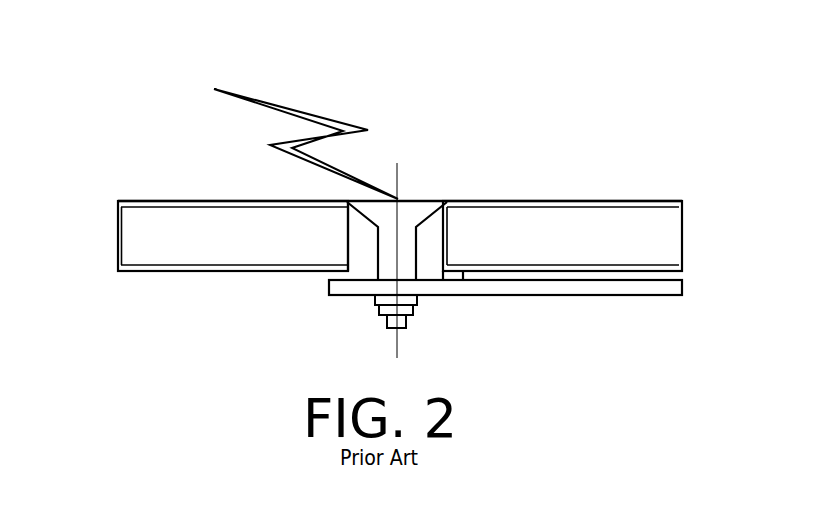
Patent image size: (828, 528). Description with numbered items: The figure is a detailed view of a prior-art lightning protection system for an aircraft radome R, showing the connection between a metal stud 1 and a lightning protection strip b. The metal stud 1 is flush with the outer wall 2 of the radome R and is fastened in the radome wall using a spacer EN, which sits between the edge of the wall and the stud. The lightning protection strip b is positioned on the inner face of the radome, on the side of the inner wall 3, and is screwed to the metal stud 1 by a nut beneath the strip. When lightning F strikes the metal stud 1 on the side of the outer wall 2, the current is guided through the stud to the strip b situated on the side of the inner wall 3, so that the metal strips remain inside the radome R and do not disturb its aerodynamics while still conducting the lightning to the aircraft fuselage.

The metal stud 1 is at (413, 203).
The outer wall 2 is at (210, 203).
The inner wall 3 is at (208, 268).
The radome R is at (106, 228).
The spacer EN is at (362, 239).
The lightning F is at (325, 122).
The lightning protection strip b is at (573, 288).